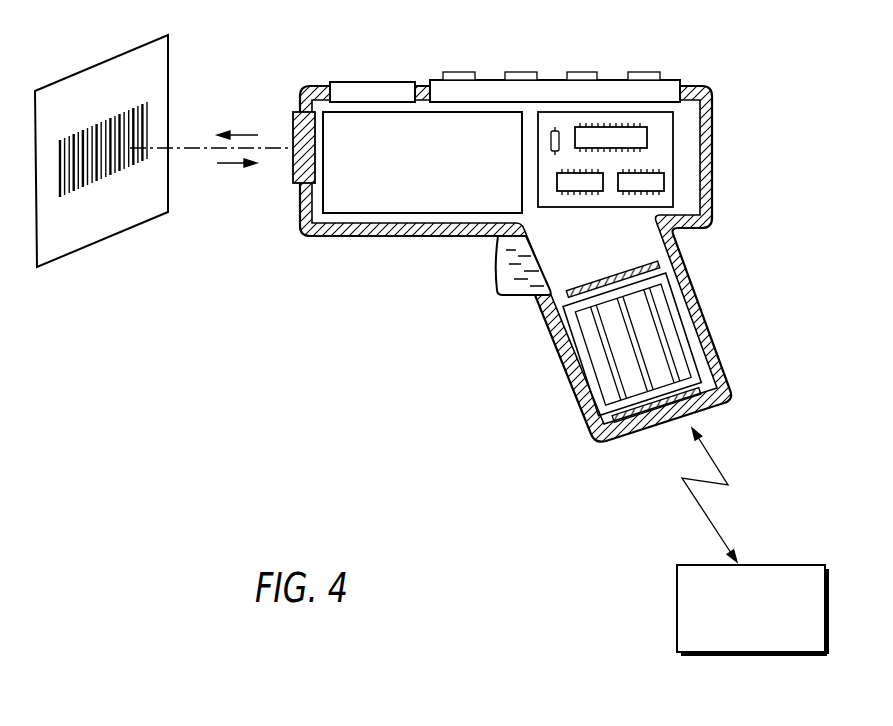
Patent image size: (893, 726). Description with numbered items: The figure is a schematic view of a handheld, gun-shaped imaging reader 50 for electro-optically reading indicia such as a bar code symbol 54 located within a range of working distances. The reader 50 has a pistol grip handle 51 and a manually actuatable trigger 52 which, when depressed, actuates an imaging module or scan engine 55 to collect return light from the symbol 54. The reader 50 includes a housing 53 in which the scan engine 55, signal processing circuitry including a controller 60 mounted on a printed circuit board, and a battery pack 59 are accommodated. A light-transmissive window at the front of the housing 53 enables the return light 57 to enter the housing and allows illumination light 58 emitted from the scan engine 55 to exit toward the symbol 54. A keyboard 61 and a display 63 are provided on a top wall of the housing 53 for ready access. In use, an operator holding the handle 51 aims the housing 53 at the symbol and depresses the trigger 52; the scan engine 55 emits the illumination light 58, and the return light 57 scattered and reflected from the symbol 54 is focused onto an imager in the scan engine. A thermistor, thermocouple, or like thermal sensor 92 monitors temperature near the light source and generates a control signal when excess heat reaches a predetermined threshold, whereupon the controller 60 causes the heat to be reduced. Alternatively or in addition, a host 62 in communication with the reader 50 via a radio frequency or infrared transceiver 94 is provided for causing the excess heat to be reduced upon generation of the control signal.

The imaging reader 50 is at (504, 250).
The pistol grip handle 51 is at (588, 432).
The trigger 52 is at (516, 282).
The housing 53 is at (708, 194).
The bar code symbol 54 is at (147, 110).
The scan engine 55 is at (297, 117).
The return light 57 is at (227, 165).
The illumination light 58 is at (250, 135).
The battery pack 59 is at (663, 320).
The controller 60 is at (629, 148).
The keyboard 61 is at (618, 72).
The host 62 is at (677, 608).
The display 63 is at (372, 82).
The thermal sensor 92 is at (561, 192).
The transceiver 94 is at (631, 183).